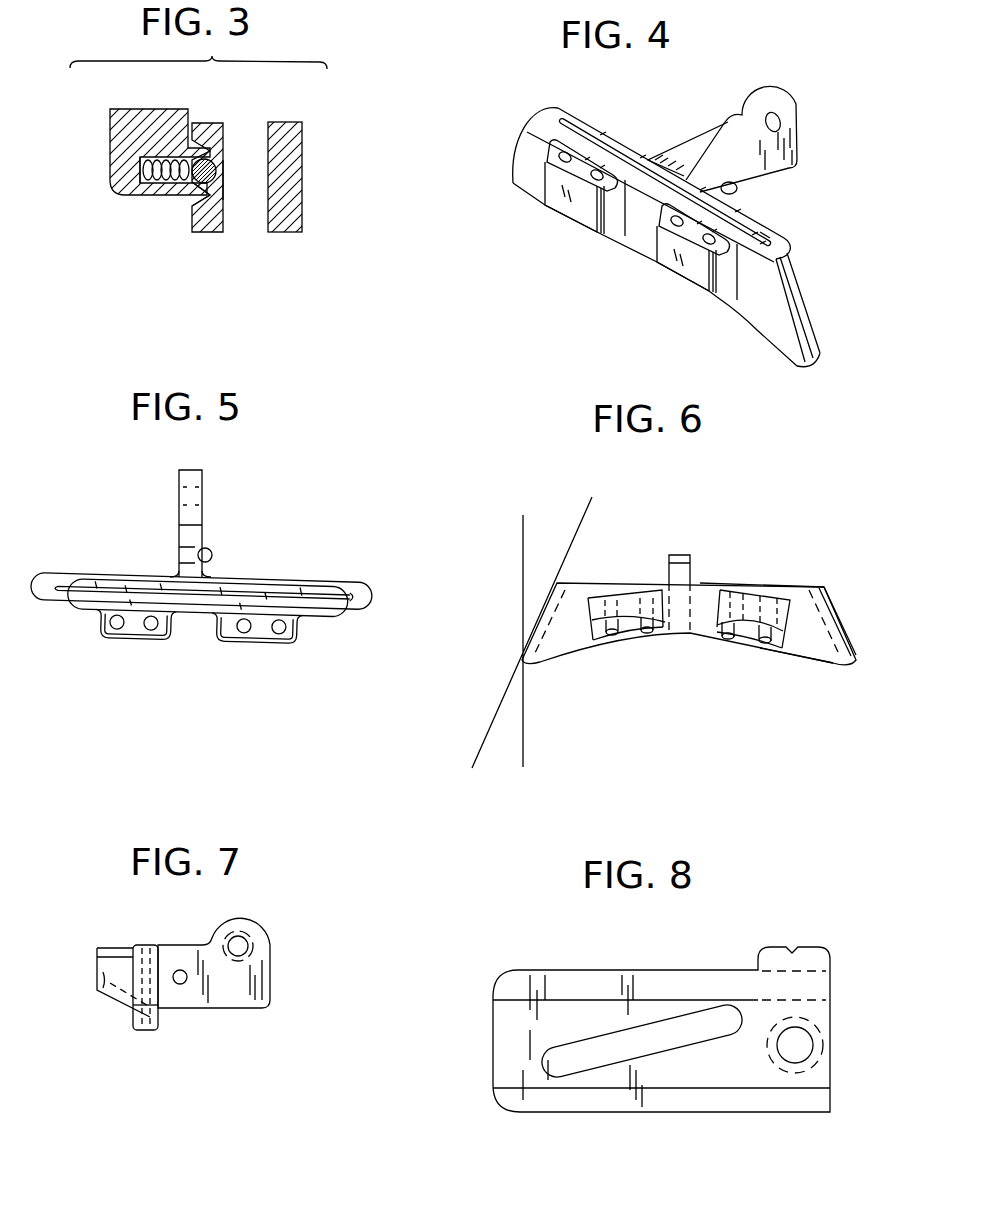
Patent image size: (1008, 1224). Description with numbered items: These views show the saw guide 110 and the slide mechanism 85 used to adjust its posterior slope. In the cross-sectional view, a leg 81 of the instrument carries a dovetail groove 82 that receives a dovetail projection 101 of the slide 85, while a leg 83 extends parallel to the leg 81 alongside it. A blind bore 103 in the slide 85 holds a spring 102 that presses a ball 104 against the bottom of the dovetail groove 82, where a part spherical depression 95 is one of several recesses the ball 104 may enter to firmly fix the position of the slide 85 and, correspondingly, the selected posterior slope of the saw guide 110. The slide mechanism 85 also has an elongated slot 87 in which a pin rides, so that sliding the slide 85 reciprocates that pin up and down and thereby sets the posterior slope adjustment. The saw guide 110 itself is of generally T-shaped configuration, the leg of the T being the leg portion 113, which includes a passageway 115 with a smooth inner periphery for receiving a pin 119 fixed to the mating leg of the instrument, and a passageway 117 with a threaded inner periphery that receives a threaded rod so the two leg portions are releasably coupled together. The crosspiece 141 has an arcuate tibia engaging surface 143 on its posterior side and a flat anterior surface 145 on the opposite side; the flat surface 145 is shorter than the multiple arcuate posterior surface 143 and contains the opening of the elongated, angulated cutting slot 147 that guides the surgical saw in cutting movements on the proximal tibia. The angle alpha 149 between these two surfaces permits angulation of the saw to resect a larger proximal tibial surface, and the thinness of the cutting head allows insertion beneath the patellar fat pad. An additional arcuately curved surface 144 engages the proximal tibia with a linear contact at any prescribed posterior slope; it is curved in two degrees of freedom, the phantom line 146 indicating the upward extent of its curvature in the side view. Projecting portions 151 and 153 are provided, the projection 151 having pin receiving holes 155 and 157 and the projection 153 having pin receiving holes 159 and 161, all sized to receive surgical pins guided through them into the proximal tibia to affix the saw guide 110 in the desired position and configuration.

In FIG. 3, the leg 81 is at (208, 230).
In FIG. 3, the dovetail groove 82 is at (192, 208).
In FIG. 3, the leg 83 is at (293, 147).
In FIG. 3, the slide mechanism 85 is at (130, 154).
In FIG. 8, the slide mechanism 85 is at (690, 1061).
In FIG. 8, the elongated slot 87 is at (587, 1040).
In FIG. 3, the part spherical depression 95 is at (225, 187).
In FIG. 3, the dovetail projection 101 is at (210, 177).
In FIG. 3, the spring 102 is at (148, 195).
In FIG. 3, the blind bore 103 is at (155, 158).
In FIG. 8, the blind bore 103 is at (805, 1040).
In FIG. 3, the ball 104 is at (212, 163).
In FIG. 4, the saw guide 110 is at (647, 222).
In FIG. 5, the saw guide 110 is at (208, 568).
In FIG. 6, the saw guide 110 is at (709, 601).
In FIG. 7, the saw guide 110 is at (200, 977).
In FIG. 4, the leg portion 113 is at (751, 145).
In FIG. 5, the leg portion 113 is at (223, 513).
In FIG. 6, the leg portion 113 is at (679, 594).
In FIG. 7, the leg portion 113 is at (249, 990).
In FIG. 7, the passageway 115 is at (183, 980).
In FIG. 4, the passageway 117 is at (782, 122).
In FIG. 5, the passageway 117 is at (202, 492).
In FIG. 7, the passageway 117 is at (248, 946).
In FIG. 4, the pin 119 is at (737, 188).
In FIG. 5, the pin 119 is at (212, 550).
In FIG. 6, the crosspiece 141 is at (852, 587).
In FIG. 6, the arcuate tibia engaging surface 143 is at (808, 658).
In FIG. 7, the arcuately curved surface 144 is at (109, 991).
In FIG. 4, the flat anterior surface 145 is at (783, 247).
In FIG. 6, the flat anterior surface 145 is at (787, 585).
In FIG. 7, the phantom line 146 is at (96, 969).
In FIG. 4, the elongated slot 147 is at (684, 237).
In FIG. 5, the elongated slot 147 is at (258, 582).
In FIG. 6, the elongated slot 147 is at (706, 612).
In FIG. 6, the angle alpha 149 is at (542, 558).
In FIG. 4, the projecting portion 151 is at (568, 180).
In FIG. 5, the projecting portion 151 is at (136, 624).
In FIG. 6, the projecting portion 151 is at (618, 646).
In FIG. 4, the projecting portion 153 is at (658, 266).
In FIG. 5, the projecting portion 153 is at (256, 628).
In FIG. 6, the projecting portion 153 is at (792, 654).
In FIG. 4, the pin receiving hole 155 is at (560, 155).
In FIG. 5, the pin receiving hole 155 is at (117, 622).
In FIG. 6, the pin receiving hole 155 is at (612, 638).
In FIG. 4, the pin receiving hole 157 is at (597, 173).
In FIG. 5, the pin receiving hole 157 is at (151, 623).
In FIG. 6, the pin receiving hole 157 is at (650, 636).
In FIG. 4, the pin receiving hole 159 is at (672, 224).
In FIG. 5, the pin receiving hole 159 is at (244, 626).
In FIG. 6, the pin receiving hole 159 is at (725, 642).
In FIG. 4, the pin receiving hole 161 is at (707, 242).
In FIG. 5, the pin receiving hole 161 is at (279, 627).
In FIG. 6, the pin receiving hole 161 is at (765, 645).